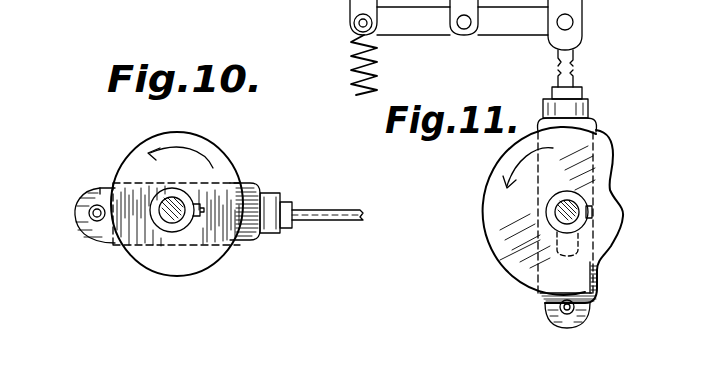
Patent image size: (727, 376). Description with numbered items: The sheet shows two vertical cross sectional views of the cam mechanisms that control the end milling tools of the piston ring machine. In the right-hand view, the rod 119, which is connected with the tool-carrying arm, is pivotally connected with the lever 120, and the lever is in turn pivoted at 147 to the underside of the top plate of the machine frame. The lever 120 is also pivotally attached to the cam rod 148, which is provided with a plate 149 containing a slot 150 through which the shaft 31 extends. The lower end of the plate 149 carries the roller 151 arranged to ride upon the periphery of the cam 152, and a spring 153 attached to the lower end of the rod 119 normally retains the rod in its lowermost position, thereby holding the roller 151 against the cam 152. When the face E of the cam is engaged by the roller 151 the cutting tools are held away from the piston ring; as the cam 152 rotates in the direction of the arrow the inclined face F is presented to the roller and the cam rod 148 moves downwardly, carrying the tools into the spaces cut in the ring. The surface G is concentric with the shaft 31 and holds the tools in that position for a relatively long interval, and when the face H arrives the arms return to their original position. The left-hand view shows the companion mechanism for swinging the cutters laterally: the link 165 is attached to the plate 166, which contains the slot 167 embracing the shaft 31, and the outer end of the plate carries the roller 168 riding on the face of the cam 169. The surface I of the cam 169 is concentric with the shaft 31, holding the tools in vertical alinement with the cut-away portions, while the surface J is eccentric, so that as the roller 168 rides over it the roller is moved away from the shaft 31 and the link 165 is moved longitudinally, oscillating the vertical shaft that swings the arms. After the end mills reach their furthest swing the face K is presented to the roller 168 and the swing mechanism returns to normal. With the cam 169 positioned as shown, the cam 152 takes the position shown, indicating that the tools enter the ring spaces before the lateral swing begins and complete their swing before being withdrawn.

In FIG. 10, the surface J of cam J is at (136, 152).
In FIG. 10, the slot 167 is at (186, 193).
In FIG. 10, the shaft 31 is at (165, 226).
In FIG. 11, the shaft 31 is at (567, 202).
In FIG. 10, the roller 168 is at (84, 226).
In FIG. 10, the cam 169 is at (126, 246).
In FIG. 10, the surface I of cam I is at (176, 276).
In FIG. 10, the plate 166 is at (252, 240).
In FIG. 10, the face K of cam K is at (258, 197).
In FIG. 10, the link 165 is at (347, 222).
In FIG. 11, the rod 119 is at (354, 2).
In FIG. 11, the pivot 147 is at (465, 31).
In FIG. 11, the lever 120 is at (536, 30).
In FIG. 11, the spring 153 is at (378, 84).
In FIG. 11, the cam rod 148 is at (578, 80).
In FIG. 11, the surface G of cam G is at (496, 257).
In FIG. 11, the cam 152 is at (506, 162).
In FIG. 11, the slot 150 is at (546, 228).
In FIG. 11, the face H of cam H is at (614, 166).
In FIG. 11, the face E of cam E is at (621, 236).
In FIG. 11, the inclined face F of cam F is at (599, 276).
In FIG. 11, the plate 149 is at (546, 295).
In FIG. 11, the roller 151 is at (566, 318).